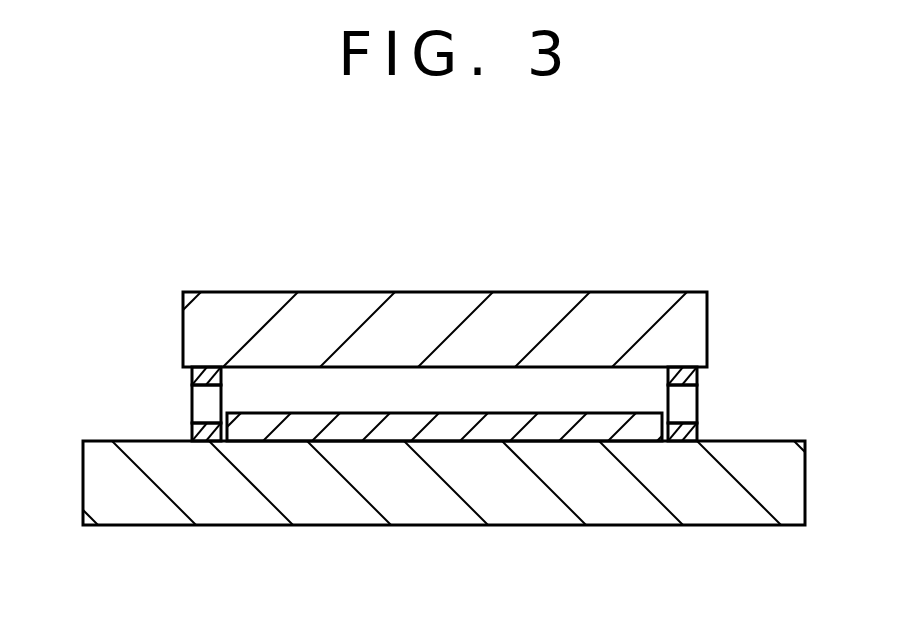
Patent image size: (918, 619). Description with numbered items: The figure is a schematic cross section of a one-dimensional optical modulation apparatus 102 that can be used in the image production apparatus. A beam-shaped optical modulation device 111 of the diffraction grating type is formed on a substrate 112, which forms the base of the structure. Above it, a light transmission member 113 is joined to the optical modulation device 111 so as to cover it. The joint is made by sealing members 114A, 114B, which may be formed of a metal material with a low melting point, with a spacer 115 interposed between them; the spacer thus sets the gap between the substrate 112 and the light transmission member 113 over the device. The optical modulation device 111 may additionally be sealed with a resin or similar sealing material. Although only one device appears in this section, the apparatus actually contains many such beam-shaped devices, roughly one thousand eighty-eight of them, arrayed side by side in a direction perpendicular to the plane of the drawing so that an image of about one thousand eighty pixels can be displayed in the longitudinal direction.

The optical modulation apparatus 102 is at (403, 273).
The optical modulation device 111 is at (545, 425).
The substrate 112 is at (440, 510).
The light transmission member 113 is at (513, 310).
The sealing member 114A is at (192, 432).
The sealing member 114B is at (192, 376).
The spacer 115 is at (205, 403).